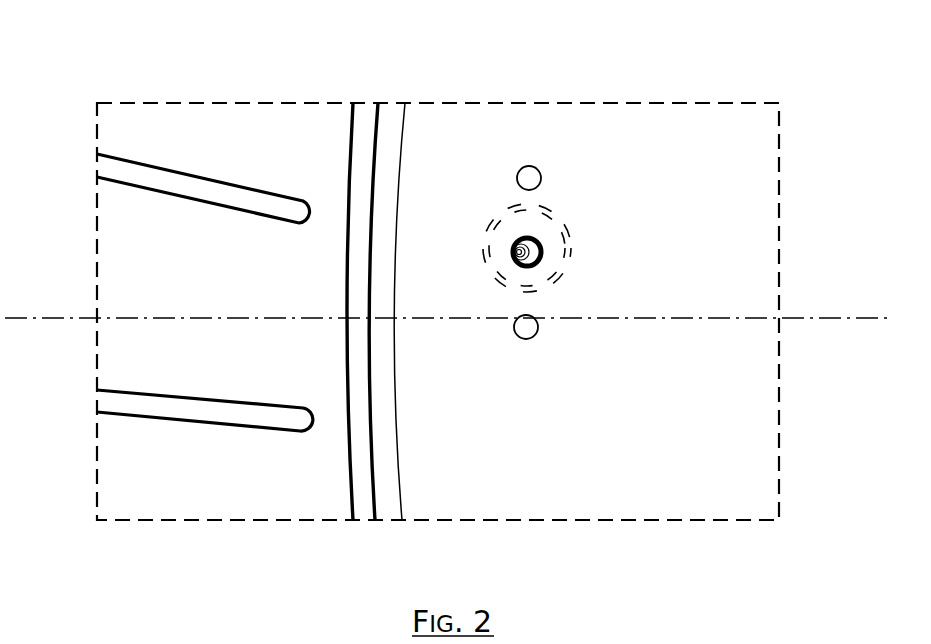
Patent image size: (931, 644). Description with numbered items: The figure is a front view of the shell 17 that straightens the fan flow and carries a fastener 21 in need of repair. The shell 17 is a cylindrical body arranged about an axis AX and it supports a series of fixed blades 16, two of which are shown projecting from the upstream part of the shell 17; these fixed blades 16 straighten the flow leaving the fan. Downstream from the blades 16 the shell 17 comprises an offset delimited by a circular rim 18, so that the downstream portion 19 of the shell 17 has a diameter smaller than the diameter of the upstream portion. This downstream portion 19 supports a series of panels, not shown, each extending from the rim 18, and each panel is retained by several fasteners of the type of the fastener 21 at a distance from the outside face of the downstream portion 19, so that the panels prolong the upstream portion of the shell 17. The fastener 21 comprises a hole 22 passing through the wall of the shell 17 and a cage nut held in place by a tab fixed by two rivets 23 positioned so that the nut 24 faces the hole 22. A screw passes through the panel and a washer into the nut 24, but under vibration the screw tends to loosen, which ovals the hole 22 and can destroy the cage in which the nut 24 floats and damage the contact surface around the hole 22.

The fixed blades 16 is at (176, 180).
The shell 17 is at (400, 301).
The circular rim 18 is at (368, 495).
The downstream portion of the shell 19 is at (438, 311).
The fastener 21 is at (545, 222).
The hole 22 is at (520, 247).
The rivets 23 is at (517, 172).
The nut 24 is at (538, 252).
The axis AX is at (78, 316).